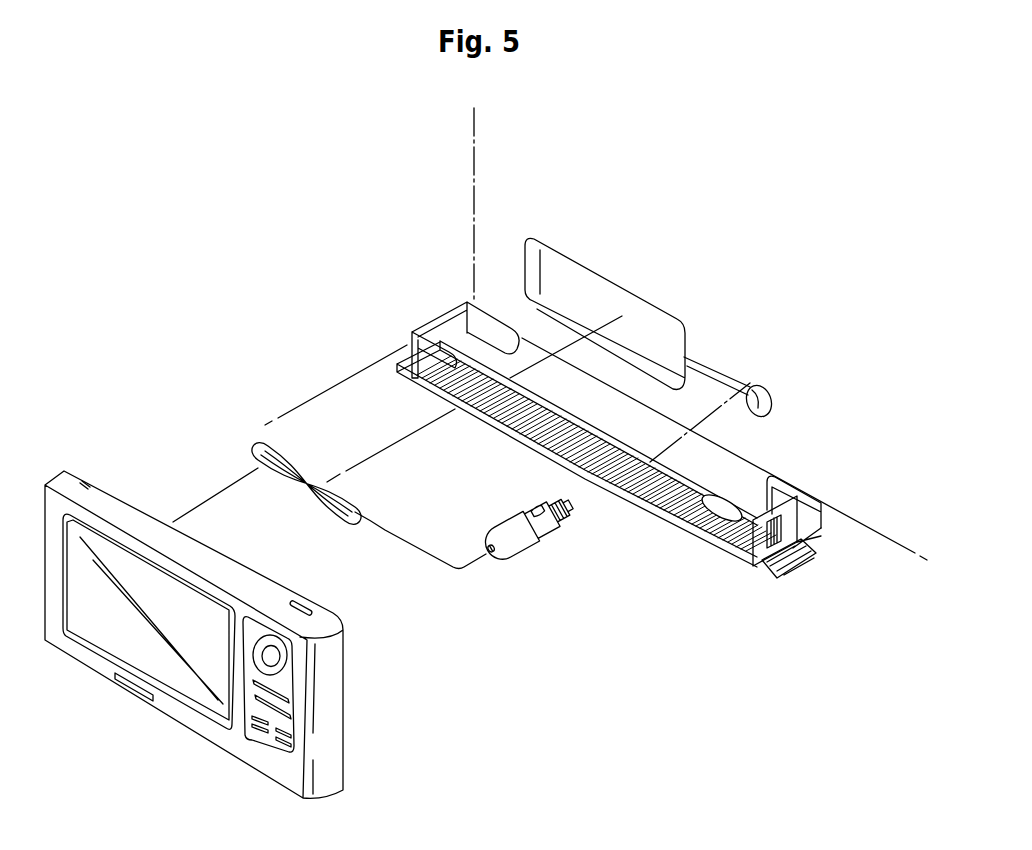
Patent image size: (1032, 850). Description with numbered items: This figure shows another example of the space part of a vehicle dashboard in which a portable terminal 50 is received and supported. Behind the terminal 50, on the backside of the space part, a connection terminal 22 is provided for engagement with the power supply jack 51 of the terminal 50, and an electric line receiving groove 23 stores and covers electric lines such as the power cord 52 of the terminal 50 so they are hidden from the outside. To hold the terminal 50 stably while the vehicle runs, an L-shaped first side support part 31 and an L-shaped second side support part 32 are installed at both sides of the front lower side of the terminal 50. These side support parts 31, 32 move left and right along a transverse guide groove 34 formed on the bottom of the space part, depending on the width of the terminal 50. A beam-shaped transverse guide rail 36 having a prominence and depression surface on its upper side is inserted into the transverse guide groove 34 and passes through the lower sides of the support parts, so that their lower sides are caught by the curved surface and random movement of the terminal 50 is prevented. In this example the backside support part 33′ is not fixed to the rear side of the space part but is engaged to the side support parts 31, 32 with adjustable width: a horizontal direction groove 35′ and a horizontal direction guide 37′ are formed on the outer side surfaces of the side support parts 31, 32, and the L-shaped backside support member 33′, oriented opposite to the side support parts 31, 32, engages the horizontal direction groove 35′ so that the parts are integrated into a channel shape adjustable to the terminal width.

The connection terminal 22 is at (753, 390).
The electric line receiving groove 23 is at (590, 297).
The first side support part 31 is at (423, 325).
The second side support part 32 is at (763, 560).
The backside support part 33′ is at (813, 528).
The transverse guide groove 34 is at (752, 567).
The horizontal direction groove 35′ is at (791, 566).
The transverse guide rail 36 is at (683, 521).
The horizontal direction guide 37′ is at (796, 546).
The terminal 50 is at (120, 648).
The power supply jack 51 is at (560, 528).
The power cord 52 is at (256, 452).